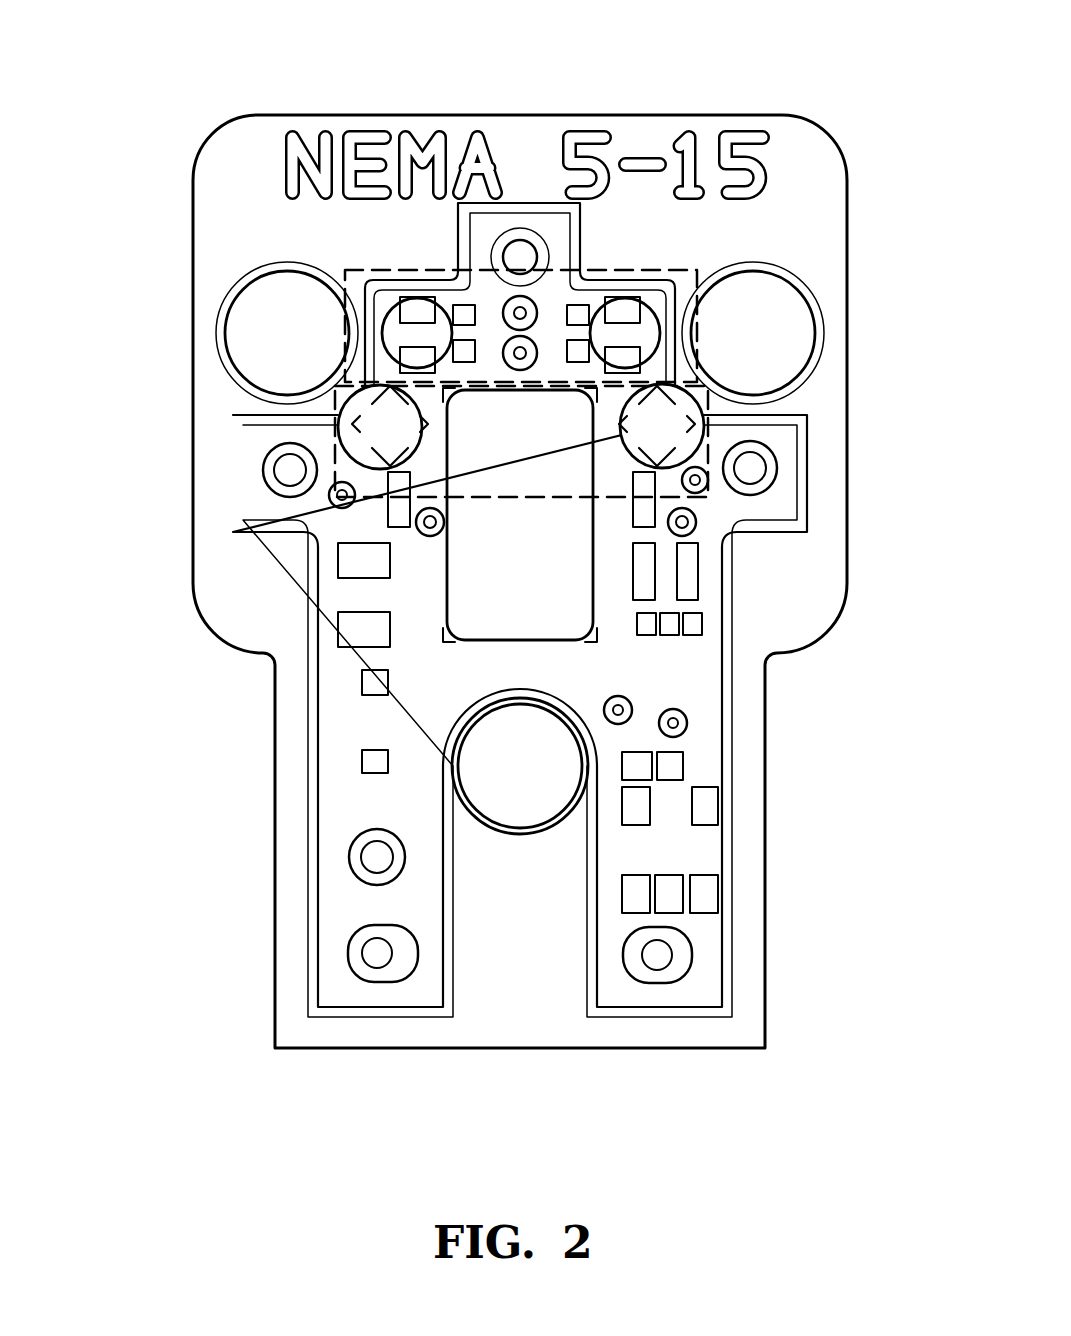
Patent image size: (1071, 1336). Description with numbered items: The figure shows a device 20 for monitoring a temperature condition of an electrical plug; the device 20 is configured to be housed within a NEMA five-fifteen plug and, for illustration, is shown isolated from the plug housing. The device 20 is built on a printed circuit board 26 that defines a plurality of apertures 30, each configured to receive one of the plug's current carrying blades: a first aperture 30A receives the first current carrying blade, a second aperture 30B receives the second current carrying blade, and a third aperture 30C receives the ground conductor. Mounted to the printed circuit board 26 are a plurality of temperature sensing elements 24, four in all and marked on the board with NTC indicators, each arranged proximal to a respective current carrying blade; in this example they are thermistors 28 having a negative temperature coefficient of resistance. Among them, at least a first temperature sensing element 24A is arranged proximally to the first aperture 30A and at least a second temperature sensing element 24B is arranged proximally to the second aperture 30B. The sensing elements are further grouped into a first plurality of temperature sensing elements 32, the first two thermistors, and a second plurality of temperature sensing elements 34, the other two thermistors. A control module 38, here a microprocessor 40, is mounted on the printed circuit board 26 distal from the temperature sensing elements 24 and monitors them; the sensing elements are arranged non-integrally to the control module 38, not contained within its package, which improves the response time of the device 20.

The device 20 is at (178, 62).
The temperature sensing elements 24 is at (410, 310).
The first temperature sensing element 24A is at (415, 290).
The second temperature sensing element 24B is at (624, 298).
The printed circuit board 26 is at (735, 750).
The thermistors 28 is at (397, 333).
The apertures 30 is at (262, 334).
The first aperture 30A is at (277, 377).
The second aperture 30B is at (783, 362).
The third aperture 30C is at (507, 803).
The first plurality of temperature sensing elements 32 is at (380, 267).
The second plurality of temperature sensing elements 34 is at (367, 497).
The control module 38 is at (570, 523).
The microprocessor 40 is at (577, 583).